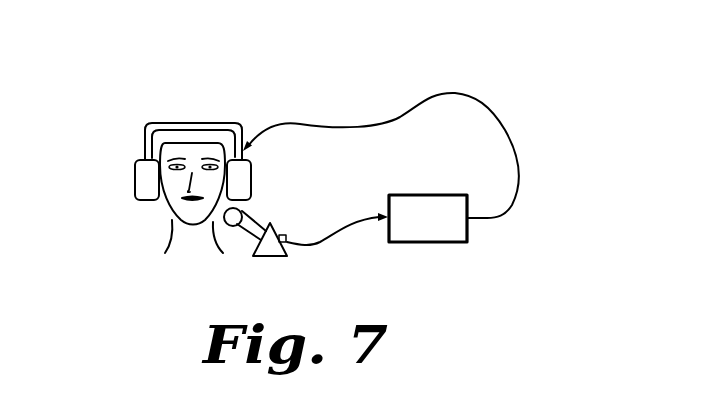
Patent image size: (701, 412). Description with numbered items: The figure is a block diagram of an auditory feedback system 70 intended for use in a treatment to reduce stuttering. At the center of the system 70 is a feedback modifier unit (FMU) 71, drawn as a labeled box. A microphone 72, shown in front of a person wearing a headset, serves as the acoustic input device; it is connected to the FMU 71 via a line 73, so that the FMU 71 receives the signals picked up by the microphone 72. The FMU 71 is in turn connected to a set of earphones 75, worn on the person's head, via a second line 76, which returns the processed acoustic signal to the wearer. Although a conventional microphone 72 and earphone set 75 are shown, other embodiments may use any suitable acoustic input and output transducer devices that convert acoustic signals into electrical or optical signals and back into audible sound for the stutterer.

The auditory feedback system 70 is at (255, 77).
The feedback modifier unit 71 is at (435, 194).
The microphone 72 is at (280, 237).
The line 73 is at (328, 240).
The set of earphones 75 is at (137, 195).
The line 76 is at (487, 220).